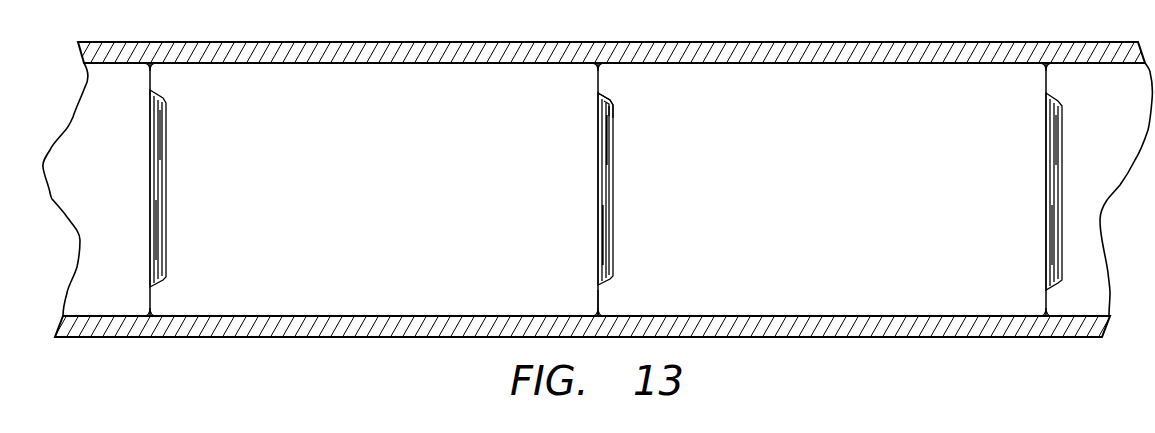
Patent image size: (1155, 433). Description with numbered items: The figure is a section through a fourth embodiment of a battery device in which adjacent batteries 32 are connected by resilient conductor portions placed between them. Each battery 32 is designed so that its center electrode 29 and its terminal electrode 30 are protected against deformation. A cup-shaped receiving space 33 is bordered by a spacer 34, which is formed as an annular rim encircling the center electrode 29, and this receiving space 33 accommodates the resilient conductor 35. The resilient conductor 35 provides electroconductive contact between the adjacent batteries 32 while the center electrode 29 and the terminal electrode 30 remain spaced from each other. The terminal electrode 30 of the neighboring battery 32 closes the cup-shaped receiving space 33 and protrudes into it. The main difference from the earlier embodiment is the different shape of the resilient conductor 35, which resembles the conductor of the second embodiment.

The battery 32 is at (822, 93).
The terminal electrode 30 is at (597, 258).
The spacer 34 is at (612, 300).
The center electrode 29 is at (613, 147).
The resilient conductor 35 is at (613, 195).
The cup-shaped receiving space 33 is at (590, 109).